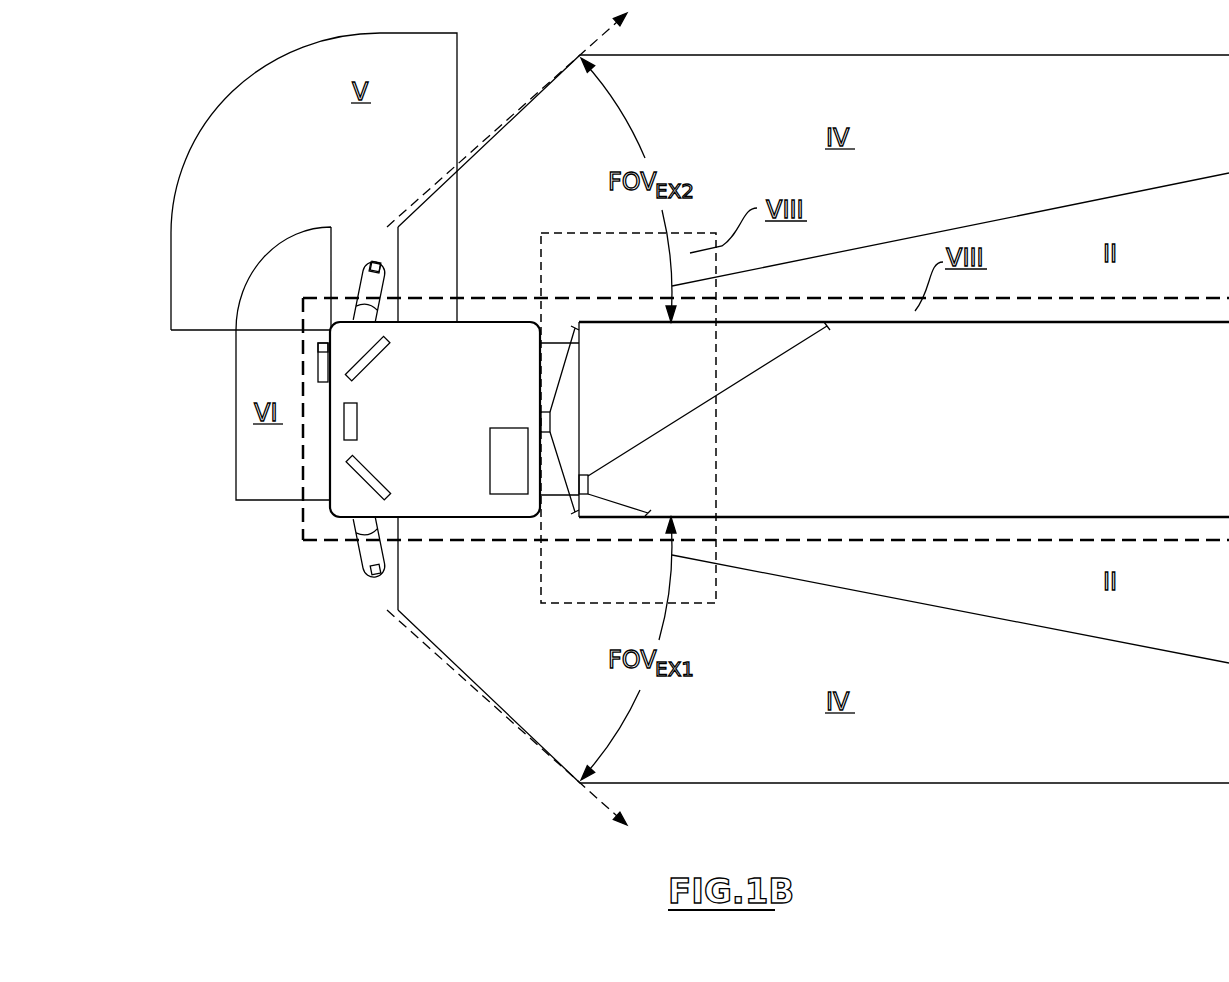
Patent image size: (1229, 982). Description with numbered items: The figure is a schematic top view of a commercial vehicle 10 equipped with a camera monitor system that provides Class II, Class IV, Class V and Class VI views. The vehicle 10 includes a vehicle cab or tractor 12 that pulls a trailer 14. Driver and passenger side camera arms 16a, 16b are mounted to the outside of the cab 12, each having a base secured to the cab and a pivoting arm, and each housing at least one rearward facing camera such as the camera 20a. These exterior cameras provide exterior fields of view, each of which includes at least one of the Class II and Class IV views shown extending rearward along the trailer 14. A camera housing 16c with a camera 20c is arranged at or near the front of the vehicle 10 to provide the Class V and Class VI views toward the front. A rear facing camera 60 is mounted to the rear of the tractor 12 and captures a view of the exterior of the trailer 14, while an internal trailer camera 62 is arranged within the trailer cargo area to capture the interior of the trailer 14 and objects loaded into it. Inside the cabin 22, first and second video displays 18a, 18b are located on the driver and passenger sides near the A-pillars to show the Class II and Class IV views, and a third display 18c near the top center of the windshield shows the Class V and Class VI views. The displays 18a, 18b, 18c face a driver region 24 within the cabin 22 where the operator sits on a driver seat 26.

The commercial vehicle 10 is at (292, 298).
The vehicle cab 12 is at (531, 397).
The trailer 14 is at (1171, 308).
The driver side camera arm 16a is at (360, 563).
The passenger side camera arm 16b is at (329, 260).
The camera housing 16c is at (318, 371).
The first video display 18a is at (373, 471).
The second video display 18b is at (373, 363).
The third display 18c is at (344, 422).
The rearward facing camera 20a is at (384, 572).
The camera 20c is at (318, 349).
The cabin 22 is at (483, 334).
The driver region 24 is at (471, 450).
The driver seat 26 is at (509, 440).
The rear facing camera 60 is at (551, 421).
The internal trailer camera 62 is at (590, 486).